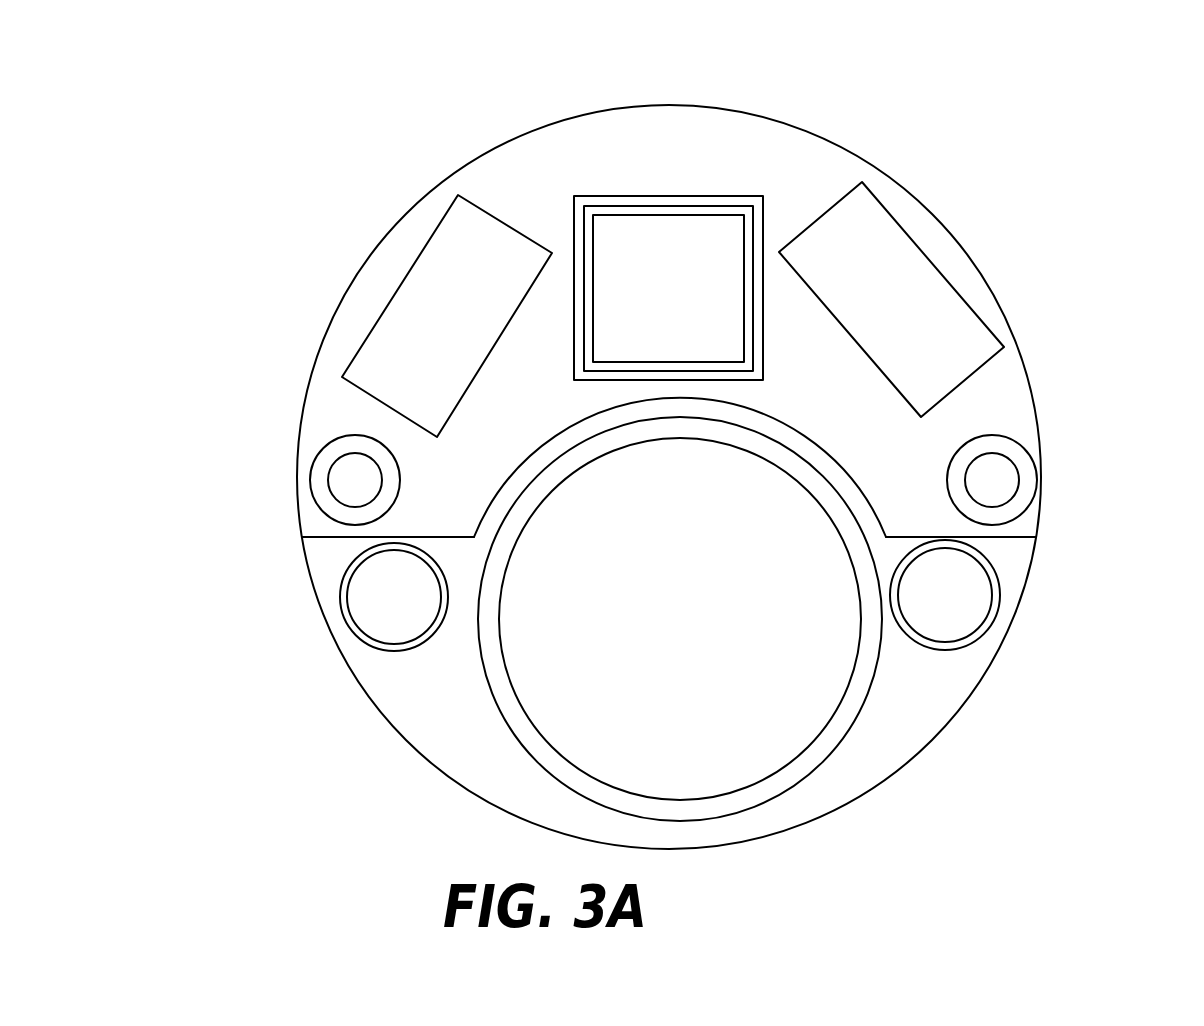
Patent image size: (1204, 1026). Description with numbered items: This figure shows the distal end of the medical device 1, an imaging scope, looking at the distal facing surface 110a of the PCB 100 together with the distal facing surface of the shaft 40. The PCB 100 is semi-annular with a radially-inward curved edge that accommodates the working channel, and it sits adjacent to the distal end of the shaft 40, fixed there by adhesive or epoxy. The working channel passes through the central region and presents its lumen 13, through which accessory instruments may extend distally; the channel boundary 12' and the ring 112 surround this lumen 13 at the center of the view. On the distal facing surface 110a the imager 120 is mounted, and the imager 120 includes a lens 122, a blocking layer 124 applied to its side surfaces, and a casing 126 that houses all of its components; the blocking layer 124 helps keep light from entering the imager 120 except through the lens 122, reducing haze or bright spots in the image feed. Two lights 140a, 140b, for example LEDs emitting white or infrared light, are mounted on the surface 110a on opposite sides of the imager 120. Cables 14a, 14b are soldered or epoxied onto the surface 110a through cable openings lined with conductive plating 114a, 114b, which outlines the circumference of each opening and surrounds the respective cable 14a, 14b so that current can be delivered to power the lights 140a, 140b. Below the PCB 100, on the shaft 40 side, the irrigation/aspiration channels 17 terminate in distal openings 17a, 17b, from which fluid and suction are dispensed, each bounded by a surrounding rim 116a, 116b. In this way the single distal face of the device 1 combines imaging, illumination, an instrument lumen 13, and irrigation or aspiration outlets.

The medical device 1 is at (275, 208).
The shaft 40 is at (452, 723).
The PCB 100 is at (840, 167).
The lumen 13 is at (787, 732).
The annular rim 12' is at (689, 667).
The inner ring 112 is at (678, 810).
The imager 120 is at (648, 167).
The casing 126 is at (653, 199).
The blocking layer 124 is at (748, 218).
The lens 122 is at (613, 287).
The light 140a is at (415, 262).
The light 140b is at (947, 277).
The distal facing surface 110a is at (878, 188).
The cable 14a is at (348, 475).
The conductive plating 114a is at (322, 510).
The cable 14b is at (1032, 500).
The conductive plating 114b is at (998, 473).
The channel 17 is at (362, 643).
The distal opening 17a is at (378, 577).
The distal opening 17b is at (962, 570).
The first opening rim 116a is at (397, 652).
The second opening rim 116b is at (948, 650).